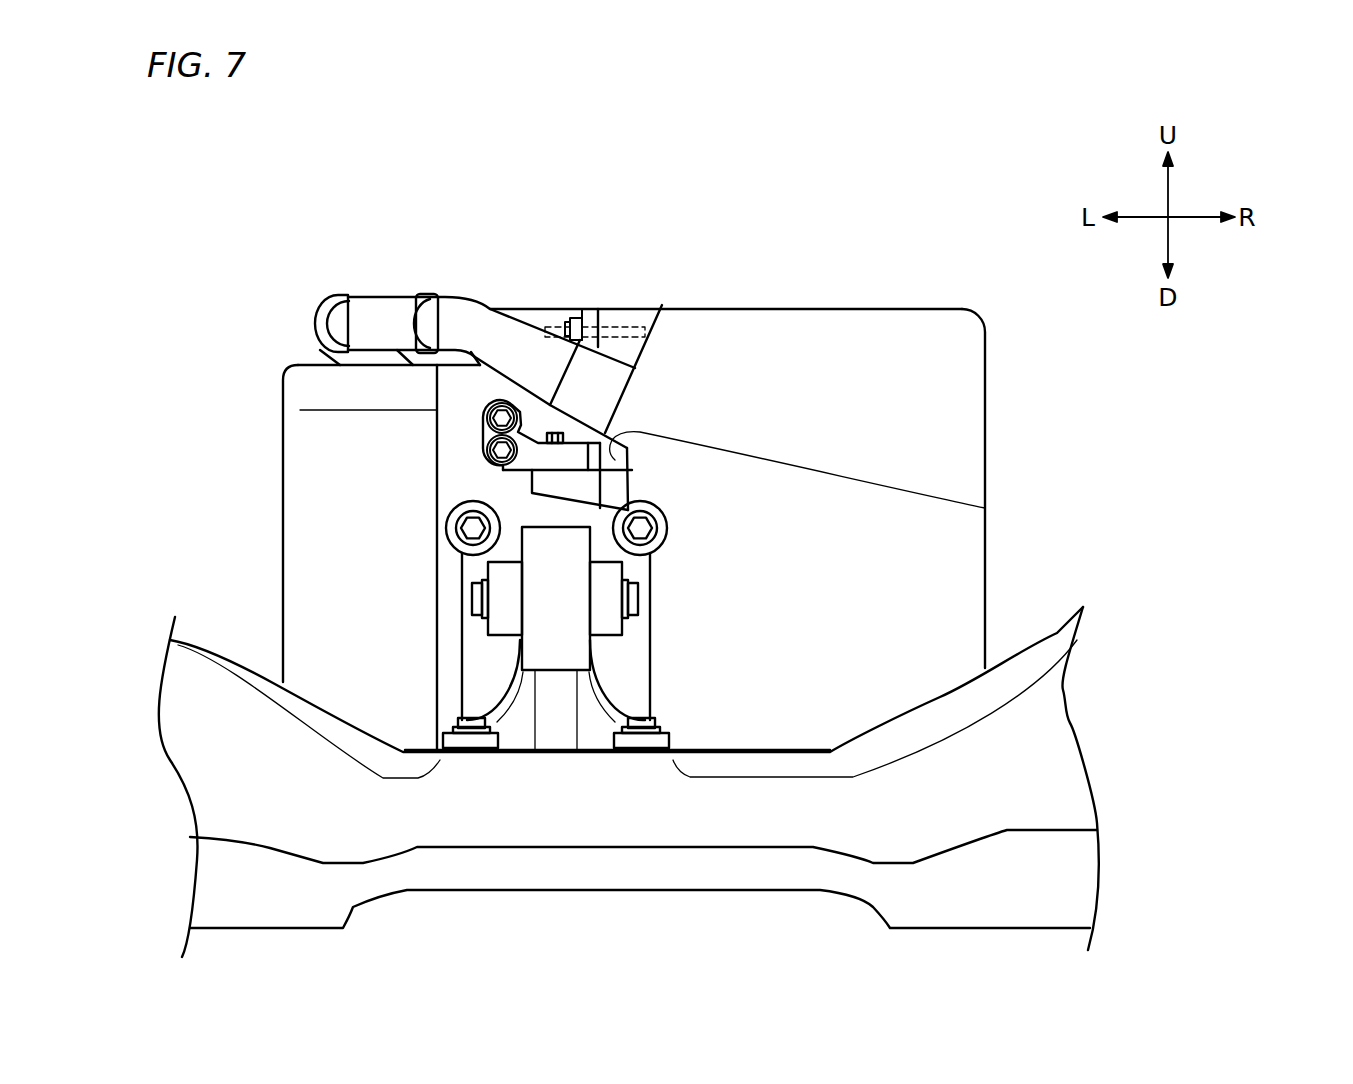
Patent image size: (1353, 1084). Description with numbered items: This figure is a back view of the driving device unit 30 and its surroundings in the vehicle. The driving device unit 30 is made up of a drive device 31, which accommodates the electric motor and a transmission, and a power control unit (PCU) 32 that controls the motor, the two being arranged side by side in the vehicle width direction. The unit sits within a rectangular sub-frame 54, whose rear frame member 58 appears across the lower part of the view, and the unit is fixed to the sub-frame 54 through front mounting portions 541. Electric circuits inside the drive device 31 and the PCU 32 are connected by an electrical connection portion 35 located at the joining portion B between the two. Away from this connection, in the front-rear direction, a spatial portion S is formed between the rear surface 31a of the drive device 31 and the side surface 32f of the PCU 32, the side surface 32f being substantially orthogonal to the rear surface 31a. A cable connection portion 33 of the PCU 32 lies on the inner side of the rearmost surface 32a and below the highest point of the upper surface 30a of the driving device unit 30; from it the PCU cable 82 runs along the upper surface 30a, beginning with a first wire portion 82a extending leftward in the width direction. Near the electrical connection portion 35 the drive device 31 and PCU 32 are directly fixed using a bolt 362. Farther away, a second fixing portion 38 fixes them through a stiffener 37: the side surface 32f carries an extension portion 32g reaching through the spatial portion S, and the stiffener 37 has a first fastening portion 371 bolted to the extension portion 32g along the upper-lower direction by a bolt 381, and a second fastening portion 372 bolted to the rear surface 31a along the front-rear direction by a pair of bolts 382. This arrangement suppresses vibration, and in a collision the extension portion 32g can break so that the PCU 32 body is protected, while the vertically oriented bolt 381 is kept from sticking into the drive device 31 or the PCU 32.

The driving device unit 30 is at (985, 285).
The upper surface 30a is at (818, 309).
The drive device 31 is at (280, 474).
The rear surface 31a is at (487, 365).
The power control unit (PCU) 32 is at (998, 366).
The rearmost surface 32a is at (880, 337).
The side surface 32f is at (985, 508).
The extension portion 32g is at (583, 487).
The cable connection portion 33 is at (628, 347).
The electrical connection portion 35 is at (553, 327).
The bolt 362 is at (572, 318).
The stiffener 37 is at (517, 489).
The first fastening portion 371 is at (603, 432).
The second fastening portion 372 is at (502, 402).
The second fixing portion 38 is at (545, 498).
The bolt 381 is at (570, 455).
The bolts 382 is at (487, 457).
The sub-frame 54 is at (1070, 708).
The front mounting portions 541 is at (545, 602).
The rear frame member 58 is at (1045, 758).
The PCU cable 82 is at (322, 300).
The first wire portion 82a is at (388, 297).
The spatial portion S is at (532, 407).
The joining portion B is at (600, 297).